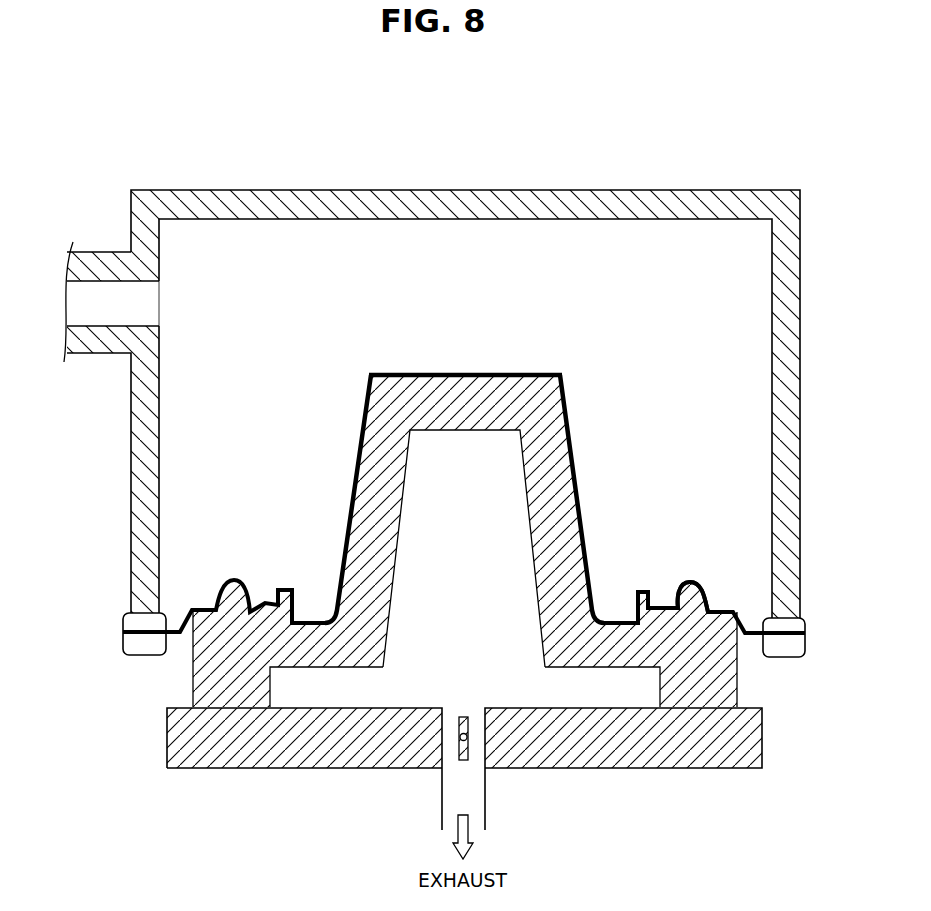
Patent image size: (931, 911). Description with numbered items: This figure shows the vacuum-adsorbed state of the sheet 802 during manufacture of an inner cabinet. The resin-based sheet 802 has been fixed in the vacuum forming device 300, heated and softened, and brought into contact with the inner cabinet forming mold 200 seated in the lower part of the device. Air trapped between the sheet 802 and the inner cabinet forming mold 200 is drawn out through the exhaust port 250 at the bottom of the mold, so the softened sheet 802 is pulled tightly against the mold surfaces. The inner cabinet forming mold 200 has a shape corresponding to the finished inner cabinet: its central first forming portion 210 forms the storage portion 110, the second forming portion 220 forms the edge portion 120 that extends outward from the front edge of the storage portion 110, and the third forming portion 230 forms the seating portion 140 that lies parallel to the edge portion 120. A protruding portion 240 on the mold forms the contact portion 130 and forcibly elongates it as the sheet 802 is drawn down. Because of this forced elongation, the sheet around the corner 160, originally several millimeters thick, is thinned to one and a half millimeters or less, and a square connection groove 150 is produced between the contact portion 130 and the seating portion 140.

The vacuum forming device 300 is at (713, 174).
The sheet 802 is at (455, 374).
The first forming portion 210 is at (368, 472).
The storage portion 110 is at (570, 446).
The second forming portion 220 is at (306, 628).
The edge portion 120 is at (616, 628).
The third forming portion 230 is at (238, 598).
The protruding portion 240 is at (284, 590).
The contact portion 130 is at (636, 590).
The connection groove 150 is at (650, 590).
The seating portion 140 is at (708, 592).
The corner 160 is at (616, 625).
The inner cabinet forming mold 200 is at (146, 750).
The exhaust port 250 is at (443, 733).